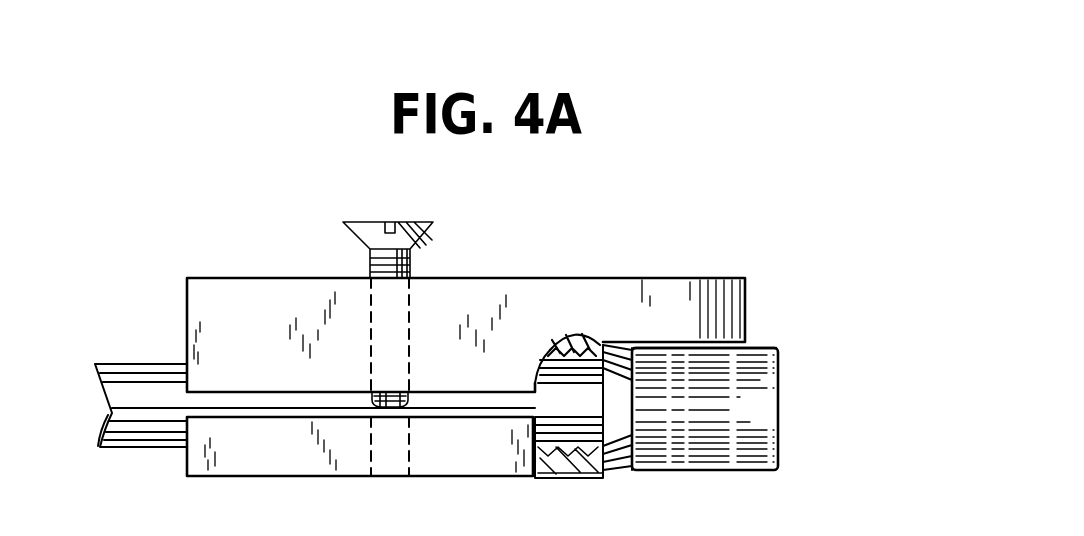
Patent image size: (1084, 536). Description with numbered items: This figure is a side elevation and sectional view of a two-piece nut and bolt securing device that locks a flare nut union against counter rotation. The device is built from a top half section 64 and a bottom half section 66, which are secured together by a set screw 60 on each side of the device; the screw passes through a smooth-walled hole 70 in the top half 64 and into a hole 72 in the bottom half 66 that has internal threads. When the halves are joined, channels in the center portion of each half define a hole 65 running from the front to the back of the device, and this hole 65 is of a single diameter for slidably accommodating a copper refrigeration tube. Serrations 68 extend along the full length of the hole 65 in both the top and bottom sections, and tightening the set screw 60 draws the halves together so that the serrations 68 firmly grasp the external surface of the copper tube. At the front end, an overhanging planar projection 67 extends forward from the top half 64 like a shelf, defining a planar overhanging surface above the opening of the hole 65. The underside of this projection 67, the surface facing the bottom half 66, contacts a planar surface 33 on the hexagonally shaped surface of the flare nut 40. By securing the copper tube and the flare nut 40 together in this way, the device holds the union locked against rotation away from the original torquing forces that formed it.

The top half section 64 is at (246, 293).
The bottom half section 66 is at (278, 462).
The set screw 60 is at (430, 222).
The hole 70 is at (400, 334).
The hole 72 is at (403, 470).
The hole 65 is at (618, 343).
The serrations 68 is at (572, 334).
The overhanging planar projection 67 is at (747, 318).
The planar surface 33 is at (765, 348).
The flare nut 40 is at (778, 443).